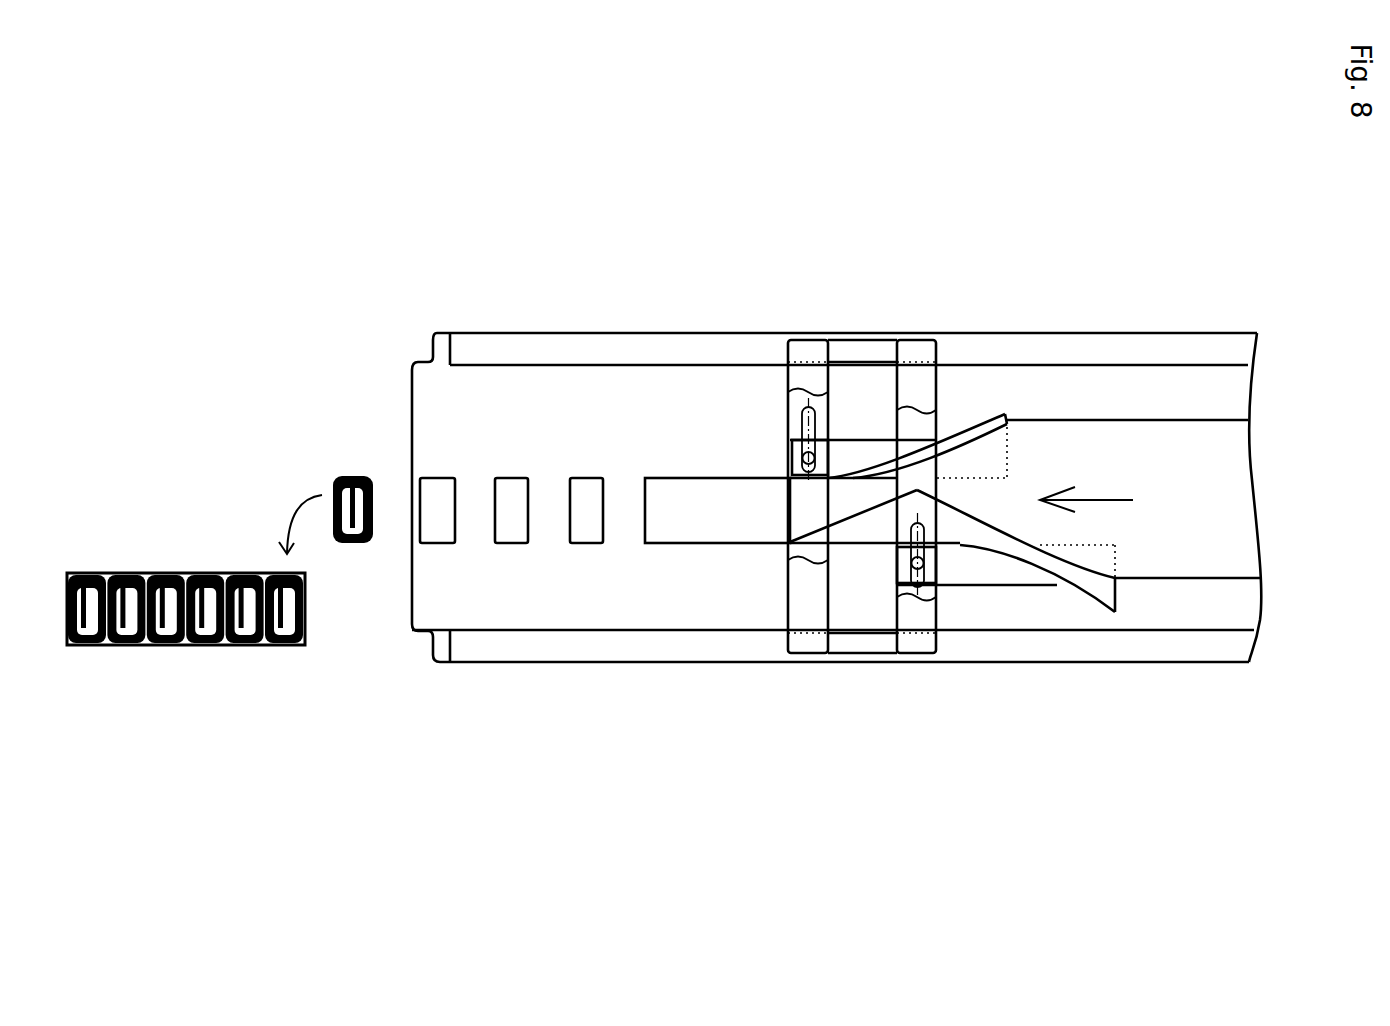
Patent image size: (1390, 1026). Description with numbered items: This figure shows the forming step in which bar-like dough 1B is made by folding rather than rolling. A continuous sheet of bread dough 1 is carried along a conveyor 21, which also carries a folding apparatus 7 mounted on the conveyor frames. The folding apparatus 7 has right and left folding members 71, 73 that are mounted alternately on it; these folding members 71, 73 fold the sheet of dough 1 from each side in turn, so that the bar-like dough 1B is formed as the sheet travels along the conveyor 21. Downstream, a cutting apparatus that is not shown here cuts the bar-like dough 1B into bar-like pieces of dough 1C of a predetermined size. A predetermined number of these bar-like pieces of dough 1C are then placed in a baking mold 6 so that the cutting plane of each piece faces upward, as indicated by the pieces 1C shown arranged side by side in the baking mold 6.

The continuous sheet of bread dough 1 is at (1217, 447).
The bar-like dough 1B is at (693, 527).
The bar-like pieces of dough 1C is at (345, 488).
The baking mold 6 is at (130, 645).
The folding apparatus 7 is at (867, 308).
The conveyor 21 is at (617, 352).
The right folding member 71 is at (967, 417).
The left folding member 73 is at (1020, 585).